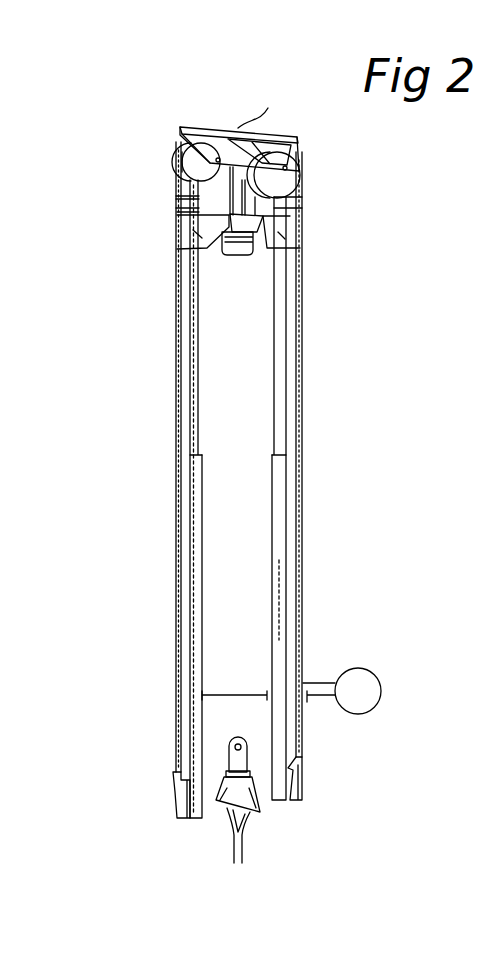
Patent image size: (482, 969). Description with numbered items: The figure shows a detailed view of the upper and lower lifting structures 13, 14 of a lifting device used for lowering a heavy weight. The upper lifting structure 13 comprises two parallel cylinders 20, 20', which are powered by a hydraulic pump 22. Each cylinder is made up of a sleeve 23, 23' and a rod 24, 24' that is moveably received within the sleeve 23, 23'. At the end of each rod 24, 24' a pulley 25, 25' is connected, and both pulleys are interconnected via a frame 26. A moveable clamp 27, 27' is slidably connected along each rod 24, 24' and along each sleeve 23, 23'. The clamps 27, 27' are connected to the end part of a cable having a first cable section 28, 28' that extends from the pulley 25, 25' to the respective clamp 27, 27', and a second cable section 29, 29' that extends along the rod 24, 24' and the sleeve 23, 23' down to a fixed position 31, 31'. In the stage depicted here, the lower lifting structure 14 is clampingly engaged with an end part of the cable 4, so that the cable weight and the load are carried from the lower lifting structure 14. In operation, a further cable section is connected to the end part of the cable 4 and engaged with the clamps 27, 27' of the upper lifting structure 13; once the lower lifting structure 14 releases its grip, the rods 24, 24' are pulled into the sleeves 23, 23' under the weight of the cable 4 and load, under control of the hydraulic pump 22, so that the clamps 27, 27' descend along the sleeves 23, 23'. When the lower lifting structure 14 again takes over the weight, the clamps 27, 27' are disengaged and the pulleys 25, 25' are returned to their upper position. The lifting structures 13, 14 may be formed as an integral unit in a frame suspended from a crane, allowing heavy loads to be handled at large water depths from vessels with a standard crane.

The cable 4 is at (232, 843).
The upper lifting structure 13 is at (148, 210).
The lower lifting structure 14 is at (258, 826).
The cylinder 20 is at (147, 636).
The cylinder 20' is at (333, 627).
The hydraulic pump 22 is at (352, 678).
The sleeve 23 is at (143, 635).
The sleeve 23' is at (335, 600).
The rod 24 is at (147, 317).
The rod 24' is at (333, 326).
The pulley 25 is at (156, 156).
The pulley 25' is at (321, 164).
The frame 26 is at (268, 108).
The moveable clamp 27 is at (161, 243).
The moveable clamp 27' is at (307, 243).
The first cable section 28 is at (162, 191).
The first cable section 28' is at (318, 195).
The second cable section 29 is at (136, 457).
The second cable section 29' is at (345, 454).
The fixed position 31 is at (141, 803).
The fixed position 31' is at (339, 768).